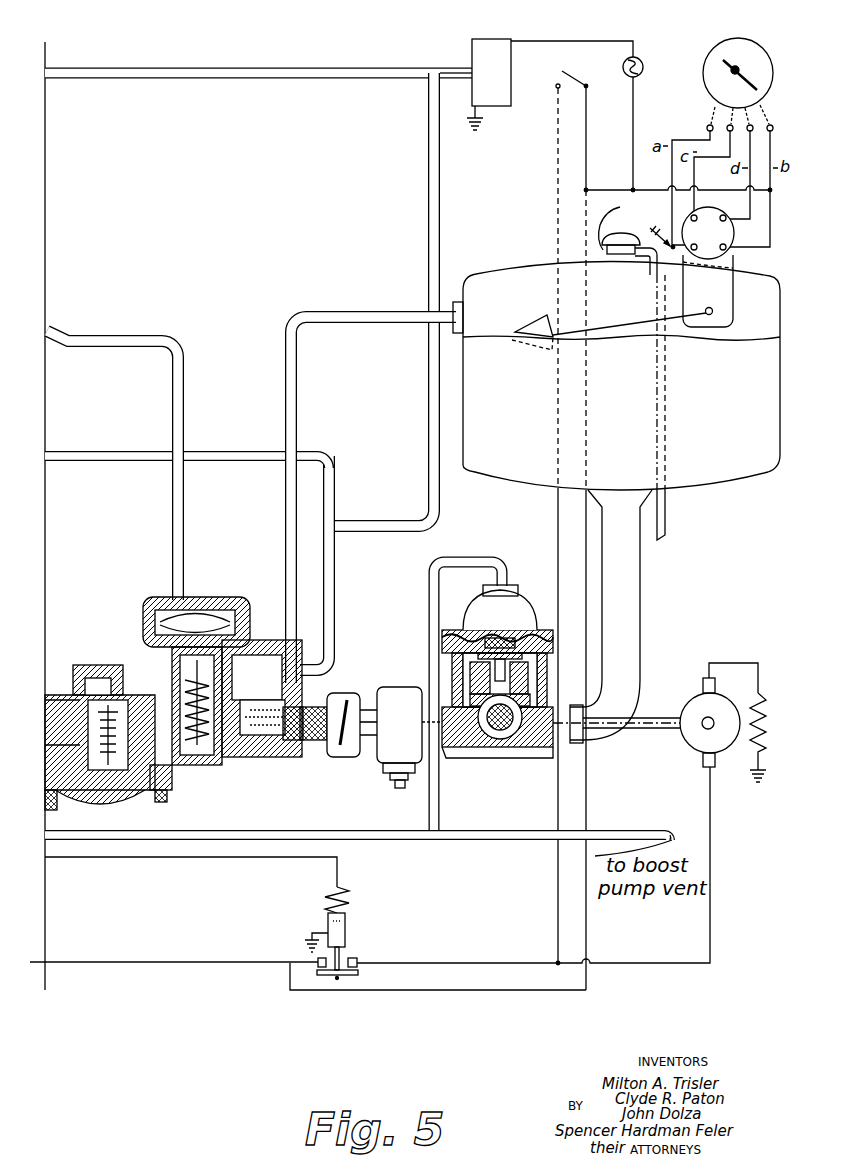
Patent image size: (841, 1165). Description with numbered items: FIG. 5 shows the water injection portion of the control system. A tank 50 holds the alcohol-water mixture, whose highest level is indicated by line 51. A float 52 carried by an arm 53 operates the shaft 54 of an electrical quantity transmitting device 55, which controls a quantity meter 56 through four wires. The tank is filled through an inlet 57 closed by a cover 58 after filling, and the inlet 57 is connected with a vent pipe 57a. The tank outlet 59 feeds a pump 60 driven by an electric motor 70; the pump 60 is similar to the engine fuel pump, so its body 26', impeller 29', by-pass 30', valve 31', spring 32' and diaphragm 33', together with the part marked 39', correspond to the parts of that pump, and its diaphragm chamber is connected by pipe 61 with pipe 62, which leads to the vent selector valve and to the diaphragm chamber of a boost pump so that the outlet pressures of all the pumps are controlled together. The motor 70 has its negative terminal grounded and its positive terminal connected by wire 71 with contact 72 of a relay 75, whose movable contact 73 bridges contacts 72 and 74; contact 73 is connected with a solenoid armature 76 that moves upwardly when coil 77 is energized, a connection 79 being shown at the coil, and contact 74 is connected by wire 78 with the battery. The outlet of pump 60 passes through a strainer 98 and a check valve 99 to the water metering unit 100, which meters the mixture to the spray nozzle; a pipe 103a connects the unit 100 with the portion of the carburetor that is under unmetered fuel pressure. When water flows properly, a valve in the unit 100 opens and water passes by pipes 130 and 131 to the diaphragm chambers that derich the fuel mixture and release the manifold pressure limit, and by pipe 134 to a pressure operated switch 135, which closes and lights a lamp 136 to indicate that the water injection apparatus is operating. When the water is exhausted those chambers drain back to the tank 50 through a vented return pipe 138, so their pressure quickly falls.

The pipe 131 is at (296, 67).
The pipe 130 is at (258, 451).
The vented return pipe 138 is at (285, 543).
The pipe 103a is at (185, 517).
The pipe 134 is at (465, 68).
The pressure operated switch 135 is at (493, 38).
The lamp 136 is at (644, 67).
The quantity meter 56 is at (748, 40).
The electrical quantity transmitting device 55 is at (740, 257).
The shaft 54 is at (714, 302).
The tank 50 is at (503, 275).
The line 51 is at (700, 338).
The float 52 is at (537, 326).
The arm 53 is at (638, 327).
The inlet 57 is at (614, 223).
The cover 58 is at (628, 240).
The vent pipe 57a is at (668, 510).
The tank outlet 59 is at (642, 595).
The pipe 61 is at (470, 560).
The pipe 62 is at (242, 830).
The pump 60 is at (517, 582).
The dome 39' is at (491, 609).
The diaphragm 32' is at (500, 617).
The diaphragm plate 33' is at (455, 616).
The stem 31' is at (532, 659).
The valve body 30' is at (528, 684).
The ball valve 29' is at (499, 739).
The valve housing 26' is at (497, 767).
The strainer 98 is at (402, 688).
The check valve 99 is at (345, 692).
The water metering unit 100 is at (95, 661).
The electric motor 70 is at (697, 700).
The wire 71 is at (712, 783).
The lead 79 is at (200, 860).
The relay 75 is at (387, 880).
The coil 77 is at (325, 893).
The solenoid armature 76 is at (345, 933).
The wire 78 is at (207, 960).
The contact 74 is at (318, 962).
The contact 72 is at (357, 962).
The movable contact 73 is at (358, 973).